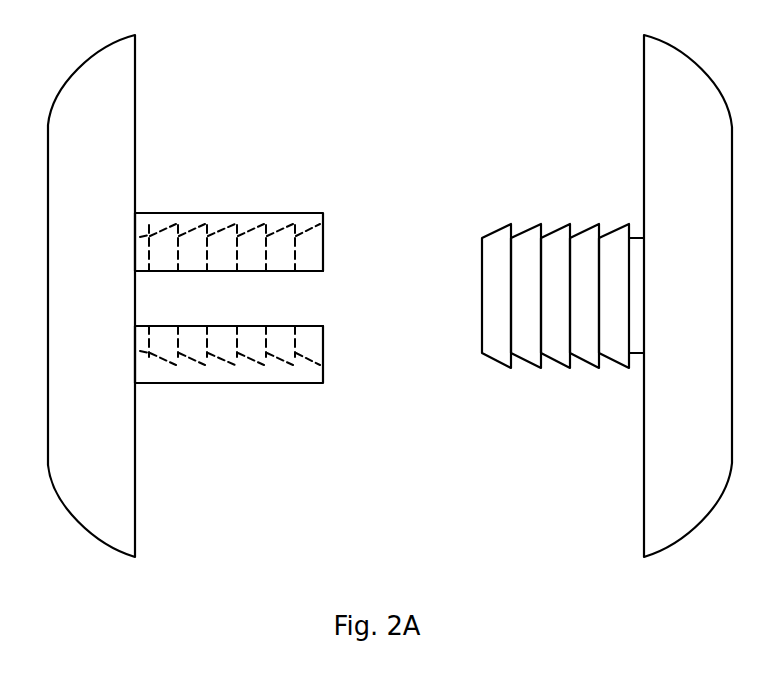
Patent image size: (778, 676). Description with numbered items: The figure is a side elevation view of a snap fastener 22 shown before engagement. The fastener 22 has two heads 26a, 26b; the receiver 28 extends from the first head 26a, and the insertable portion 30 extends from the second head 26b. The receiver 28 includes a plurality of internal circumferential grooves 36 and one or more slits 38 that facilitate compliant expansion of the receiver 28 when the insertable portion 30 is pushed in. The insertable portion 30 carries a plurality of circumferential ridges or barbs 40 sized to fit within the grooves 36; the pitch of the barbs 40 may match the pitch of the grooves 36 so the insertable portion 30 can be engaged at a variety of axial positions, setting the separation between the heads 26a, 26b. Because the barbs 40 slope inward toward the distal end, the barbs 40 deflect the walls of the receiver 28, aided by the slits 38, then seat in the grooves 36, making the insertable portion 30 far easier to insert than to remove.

The fastener 22 is at (355, 150).
The head 26a is at (68, 105).
The head 26b is at (697, 105).
The receiver 28 is at (229, 296).
The insertable portion 30 is at (535, 308).
The internal circumferential grooves 36 is at (272, 368).
The slits 38 is at (246, 271).
The circumferential ridges or barbs 40 is at (530, 238).